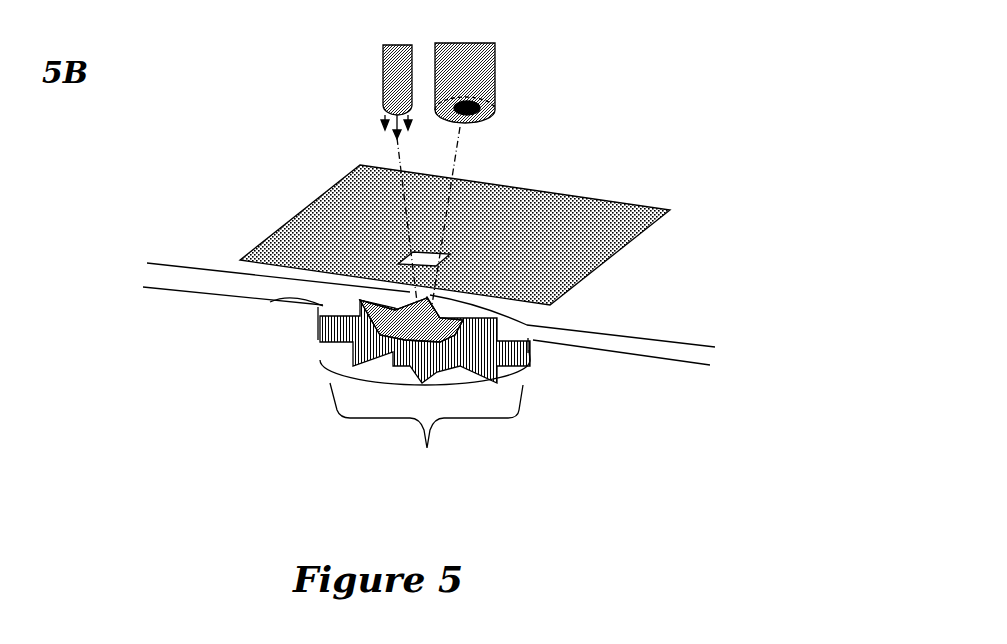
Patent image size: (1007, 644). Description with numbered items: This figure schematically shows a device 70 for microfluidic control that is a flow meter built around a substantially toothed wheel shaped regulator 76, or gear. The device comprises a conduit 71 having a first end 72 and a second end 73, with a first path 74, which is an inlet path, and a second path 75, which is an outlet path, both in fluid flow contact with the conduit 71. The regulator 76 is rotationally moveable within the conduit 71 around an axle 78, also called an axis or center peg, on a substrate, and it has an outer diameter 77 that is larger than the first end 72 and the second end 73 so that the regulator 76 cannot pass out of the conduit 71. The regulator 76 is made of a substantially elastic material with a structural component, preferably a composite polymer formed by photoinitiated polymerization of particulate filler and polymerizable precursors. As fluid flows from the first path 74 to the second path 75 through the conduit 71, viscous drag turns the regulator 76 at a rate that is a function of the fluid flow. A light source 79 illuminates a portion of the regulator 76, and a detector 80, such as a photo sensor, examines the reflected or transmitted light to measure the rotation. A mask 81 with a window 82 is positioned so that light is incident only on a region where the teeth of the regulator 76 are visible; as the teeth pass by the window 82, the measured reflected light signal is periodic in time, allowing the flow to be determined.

The device 70 is at (233, 62).
The conduit 71 is at (527, 383).
The first end 72 is at (275, 300).
The second end 73 is at (527, 316).
The first path 74 is at (136, 272).
The second path 75 is at (833, 373).
The regulator 76 is at (333, 372).
The outer diameter 77 is at (427, 448).
The axle 78 is at (317, 343).
The light source 79 is at (390, 62).
The detector 80 is at (480, 85).
The mask 81 is at (603, 250).
The window 82 is at (403, 262).